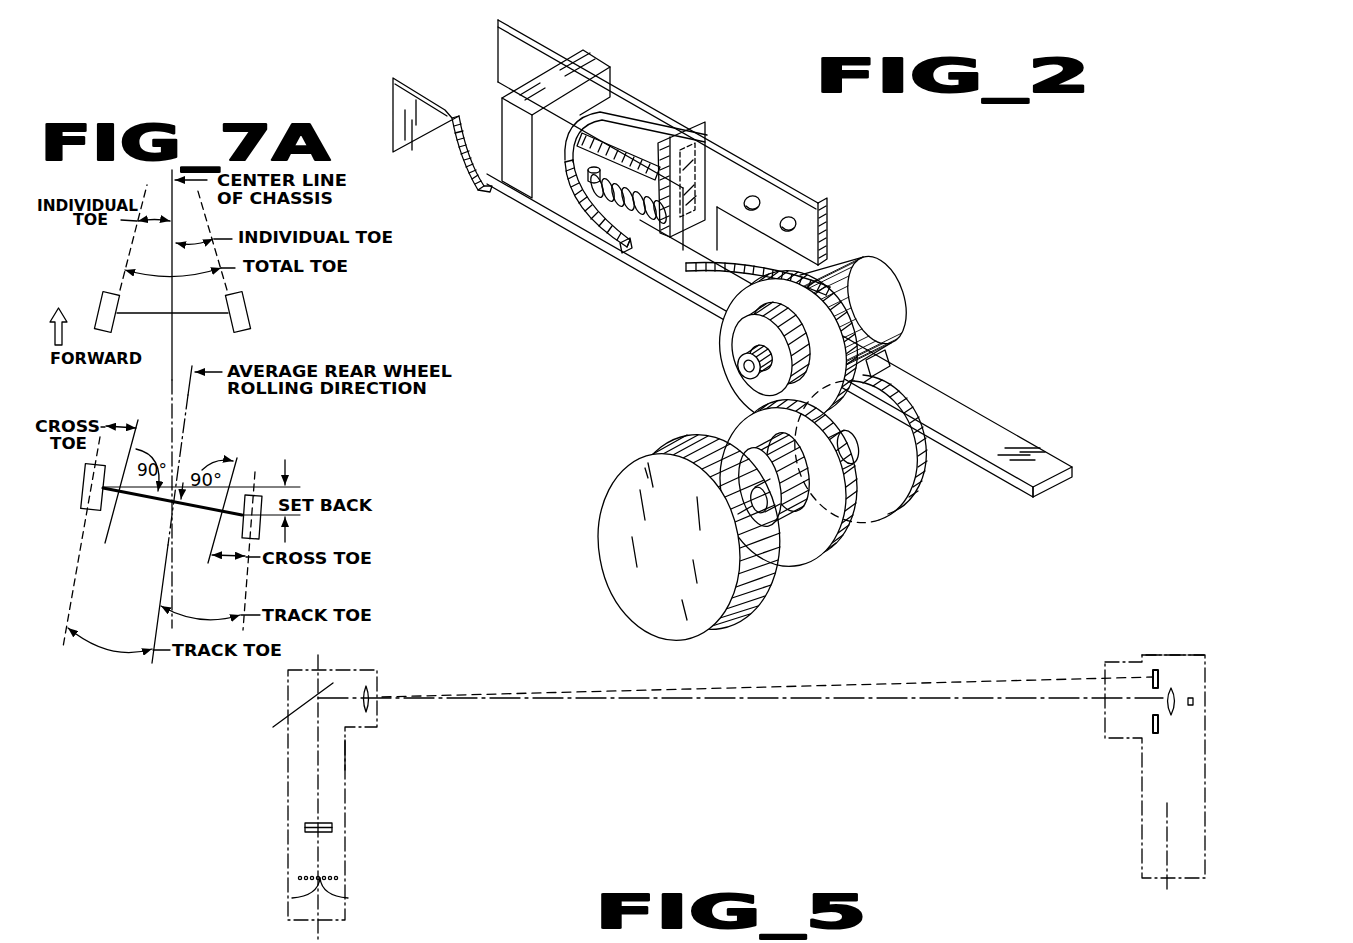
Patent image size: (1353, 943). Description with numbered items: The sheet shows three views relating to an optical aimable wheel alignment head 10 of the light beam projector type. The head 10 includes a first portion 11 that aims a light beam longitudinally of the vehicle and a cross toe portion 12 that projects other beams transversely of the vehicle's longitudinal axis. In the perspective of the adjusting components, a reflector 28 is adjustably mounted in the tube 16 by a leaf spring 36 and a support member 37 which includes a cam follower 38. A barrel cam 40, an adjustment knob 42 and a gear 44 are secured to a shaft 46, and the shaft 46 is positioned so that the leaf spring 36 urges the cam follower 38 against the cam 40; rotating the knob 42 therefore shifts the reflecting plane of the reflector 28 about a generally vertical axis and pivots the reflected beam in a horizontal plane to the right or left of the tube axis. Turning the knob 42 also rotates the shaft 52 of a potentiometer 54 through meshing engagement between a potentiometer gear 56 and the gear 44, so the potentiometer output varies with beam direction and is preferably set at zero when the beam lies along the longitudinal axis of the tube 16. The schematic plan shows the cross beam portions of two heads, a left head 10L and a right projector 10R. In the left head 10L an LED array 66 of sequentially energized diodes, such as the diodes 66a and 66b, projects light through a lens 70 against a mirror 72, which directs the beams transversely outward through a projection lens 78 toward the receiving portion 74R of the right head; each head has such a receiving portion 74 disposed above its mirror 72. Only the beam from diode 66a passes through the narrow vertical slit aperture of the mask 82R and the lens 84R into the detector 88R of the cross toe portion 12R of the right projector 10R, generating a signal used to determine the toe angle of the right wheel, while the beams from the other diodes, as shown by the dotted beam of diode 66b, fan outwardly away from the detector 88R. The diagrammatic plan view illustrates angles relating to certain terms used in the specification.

In FIG. 2, the optical aimable wheel alignment head 10 is at (1007, 277).
In FIG. 2, the first portion 11 is at (832, 193).
In FIG. 2, the tube 16 is at (457, 187).
In FIG. 5, the tube 16 is at (348, 754).
In FIG. 2, the reflector 28 is at (700, 130).
In FIG. 2, the leaf spring 36 is at (733, 173).
In FIG. 2, the support member 37 is at (637, 263).
In FIG. 2, the cam follower 38 is at (913, 517).
In FIG. 2, the barrel cam 40 is at (870, 470).
In FIG. 2, the adjustment knob 42 is at (657, 443).
In FIG. 2, the gear 44 is at (740, 410).
In FIG. 2, the shaft 46 is at (850, 478).
In FIG. 2, the potentiometer shaft 52 is at (742, 365).
In FIG. 2, the potentiometer 54 is at (875, 280).
In FIG. 2, the potentiometer gear 56 is at (727, 330).
In FIG. 5, the left head 10L is at (266, 857).
In FIG. 5, the right projector 10R is at (1215, 838).
In FIG. 5, the cross toe portion 12 is at (286, 812).
In FIG. 5, the cross toe portion of right projector 12R is at (1210, 795).
In FIG. 5, the LED array 66 is at (328, 871).
In FIG. 5, the diode 66a is at (348, 898).
In FIG. 5, the diode 66b is at (292, 898).
In FIG. 5, the lens 70 is at (332, 823).
In FIG. 5, the mirror 72 is at (280, 722).
In FIG. 5, the receiving portion 74 is at (358, 668).
In FIG. 5, the receiving portion of right head 74R is at (1158, 652).
In FIG. 5, the projection lens 78 is at (370, 685).
In FIG. 5, the mask 82R is at (1163, 688).
In FIG. 5, the lens 84R is at (1178, 695).
In FIG. 5, the detector 88R is at (1194, 702).